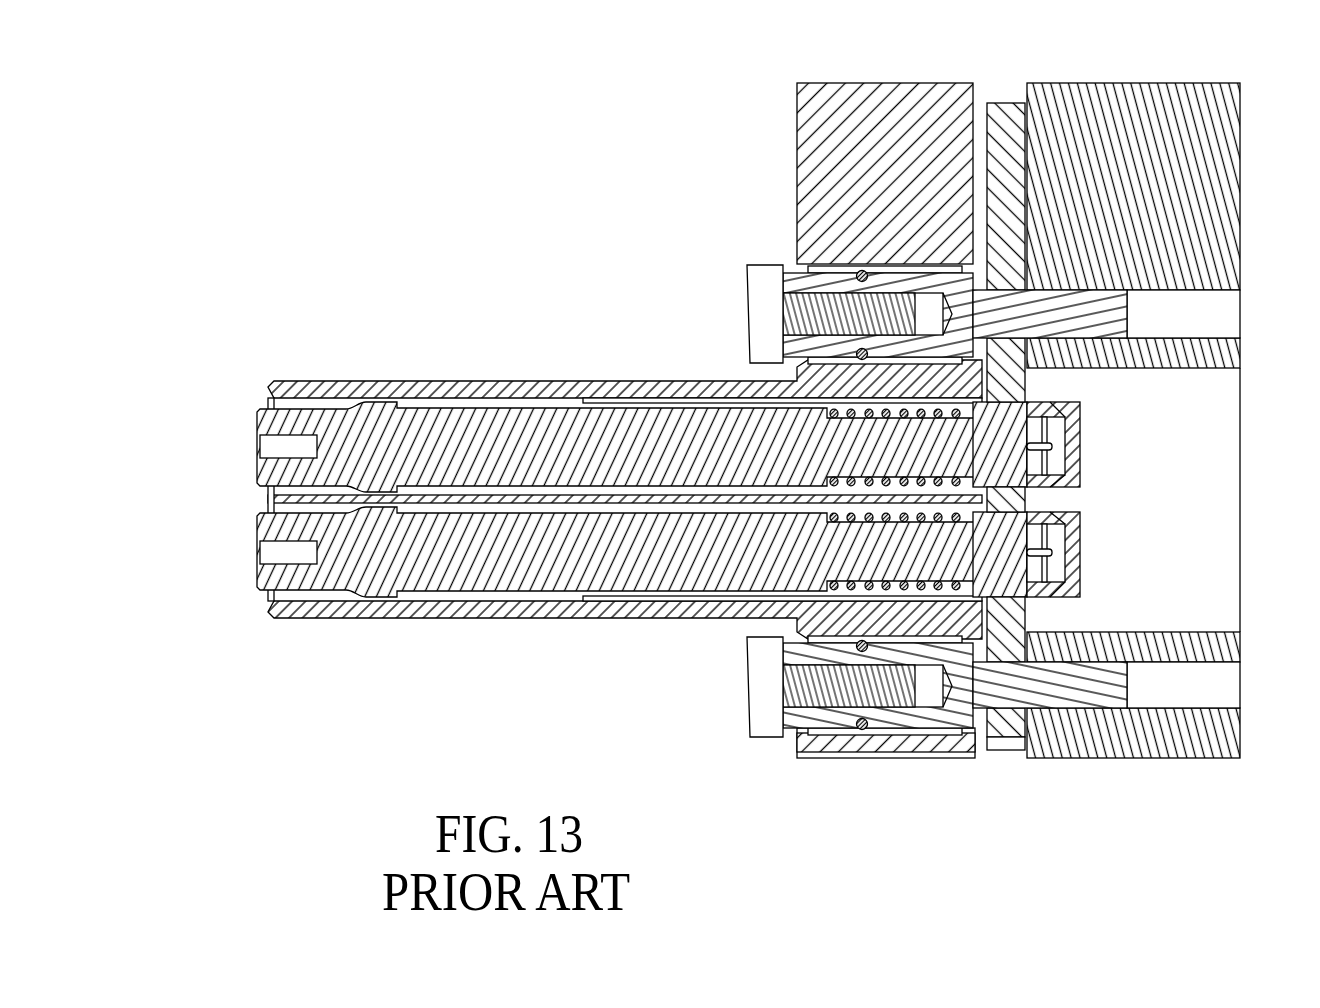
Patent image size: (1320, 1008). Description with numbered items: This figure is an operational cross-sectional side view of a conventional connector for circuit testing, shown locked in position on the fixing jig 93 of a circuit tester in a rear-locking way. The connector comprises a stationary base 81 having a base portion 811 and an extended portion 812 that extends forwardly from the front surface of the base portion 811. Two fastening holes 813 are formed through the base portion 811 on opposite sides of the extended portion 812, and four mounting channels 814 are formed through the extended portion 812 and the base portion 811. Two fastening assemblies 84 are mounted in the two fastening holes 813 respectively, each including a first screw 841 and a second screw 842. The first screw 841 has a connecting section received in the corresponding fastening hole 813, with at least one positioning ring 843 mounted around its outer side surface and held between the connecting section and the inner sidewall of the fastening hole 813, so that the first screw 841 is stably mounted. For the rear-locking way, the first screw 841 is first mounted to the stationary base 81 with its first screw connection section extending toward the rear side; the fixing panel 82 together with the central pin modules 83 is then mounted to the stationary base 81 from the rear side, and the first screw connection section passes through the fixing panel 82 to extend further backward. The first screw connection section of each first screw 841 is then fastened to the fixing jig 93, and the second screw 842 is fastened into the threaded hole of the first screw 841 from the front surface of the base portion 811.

The stationary base 81 is at (625, 422).
The base portion 811 is at (877, 135).
The extended portion 812 is at (552, 390).
The fastening holes 813 is at (945, 729).
The mounting channels 814 is at (548, 598).
The fixing panel 82 is at (1008, 135).
The central pin modules 83 is at (457, 423).
The fastening assemblies 84 is at (893, 518).
The first screw 841 is at (823, 283).
The second screw 842 is at (795, 303).
The positioning ring 843 is at (858, 268).
The fixing jig 93 is at (1203, 190).